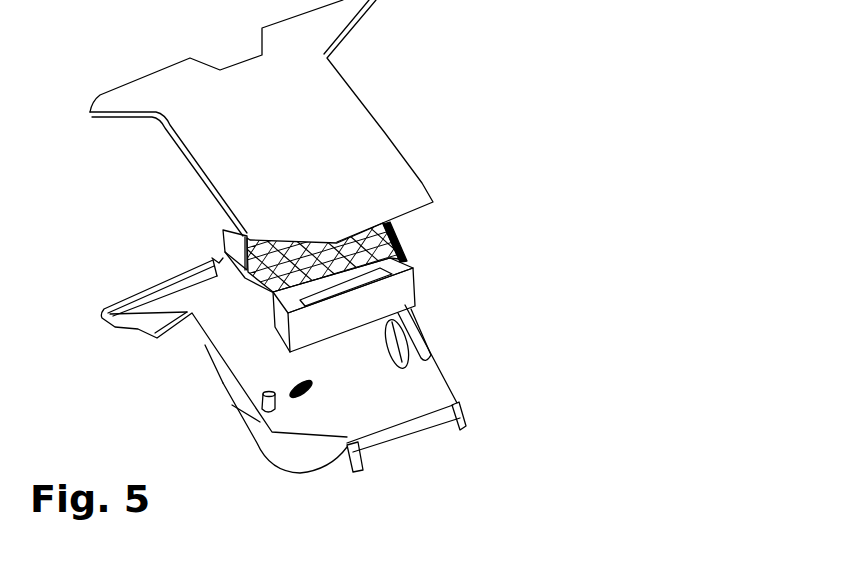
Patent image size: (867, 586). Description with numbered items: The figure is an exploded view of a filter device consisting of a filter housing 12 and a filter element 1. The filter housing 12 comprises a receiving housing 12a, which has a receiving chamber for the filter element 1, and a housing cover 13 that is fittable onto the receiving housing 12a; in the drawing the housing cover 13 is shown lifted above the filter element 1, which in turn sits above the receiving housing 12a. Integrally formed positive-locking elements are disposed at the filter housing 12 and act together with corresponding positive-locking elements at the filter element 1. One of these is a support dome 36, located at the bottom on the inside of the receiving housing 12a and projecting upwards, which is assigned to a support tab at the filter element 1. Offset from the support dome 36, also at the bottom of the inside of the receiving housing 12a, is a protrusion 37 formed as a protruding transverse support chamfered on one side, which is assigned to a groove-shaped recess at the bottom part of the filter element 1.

The filter element 1 is at (422, 257).
The filter housing 12 is at (126, 339).
The receiving housing 12a is at (423, 397).
The housing cover 13 is at (353, 137).
The support dome 36 is at (261, 402).
The protrusion 37 is at (295, 397).